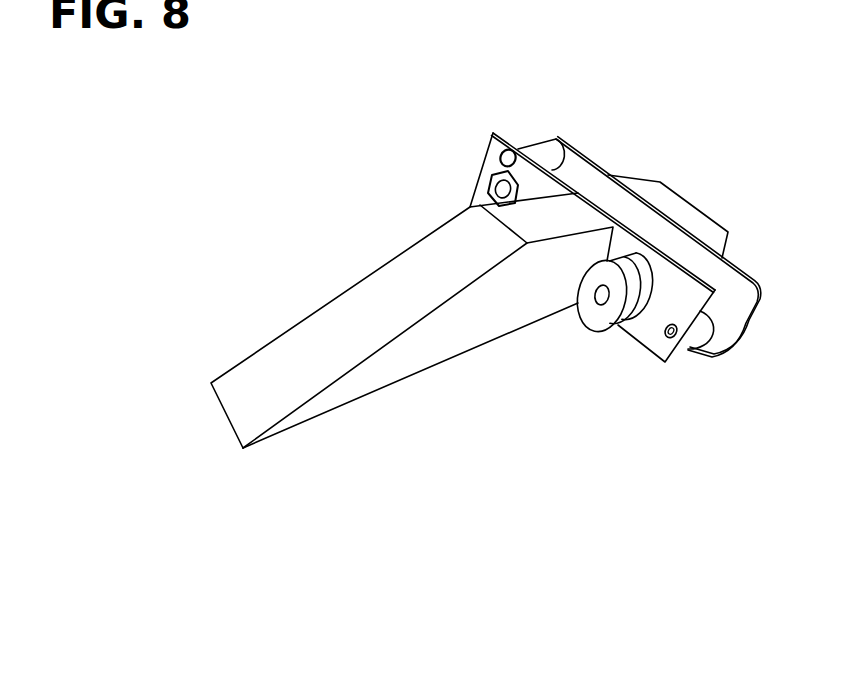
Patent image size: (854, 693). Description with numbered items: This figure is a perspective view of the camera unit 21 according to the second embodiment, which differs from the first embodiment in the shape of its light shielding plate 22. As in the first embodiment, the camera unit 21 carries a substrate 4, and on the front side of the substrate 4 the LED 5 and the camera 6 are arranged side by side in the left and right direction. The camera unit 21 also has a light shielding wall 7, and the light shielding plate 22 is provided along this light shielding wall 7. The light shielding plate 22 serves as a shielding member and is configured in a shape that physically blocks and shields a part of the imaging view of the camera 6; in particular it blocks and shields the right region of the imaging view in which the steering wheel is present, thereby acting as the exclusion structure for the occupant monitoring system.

The substrate 4 is at (538, 165).
The LED 5 is at (493, 192).
The camera 6 is at (612, 328).
The light shielding wall 7 is at (463, 328).
The camera unit 21 is at (632, 152).
The light shielding plate 22 is at (328, 335).